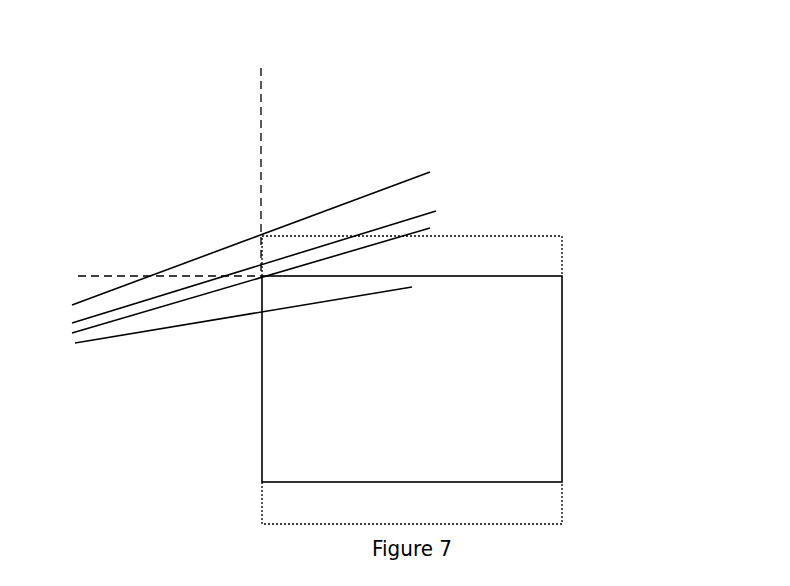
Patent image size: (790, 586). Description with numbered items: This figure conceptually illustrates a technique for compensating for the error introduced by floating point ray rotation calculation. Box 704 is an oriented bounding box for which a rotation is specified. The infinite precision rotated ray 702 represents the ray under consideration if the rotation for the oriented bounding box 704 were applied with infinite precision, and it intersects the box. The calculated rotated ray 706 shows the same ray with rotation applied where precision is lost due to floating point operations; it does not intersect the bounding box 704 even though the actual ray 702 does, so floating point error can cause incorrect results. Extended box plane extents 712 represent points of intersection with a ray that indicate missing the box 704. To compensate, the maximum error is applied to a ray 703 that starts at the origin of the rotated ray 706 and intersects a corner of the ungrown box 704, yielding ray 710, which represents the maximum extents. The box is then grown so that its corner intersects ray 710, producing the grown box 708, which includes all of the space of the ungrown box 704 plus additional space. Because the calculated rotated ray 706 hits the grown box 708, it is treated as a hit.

The infinite precision rotated ray 702 is at (336, 301).
The ray intersecting corner of ungrown box 703 is at (420, 229).
The oriented bounding box 704 is at (562, 398).
The calculated rotated ray 706 is at (428, 213).
The grown box 708 is at (514, 234).
The maximum error ray 710 is at (327, 210).
The extended box plane extents 712 is at (262, 88).